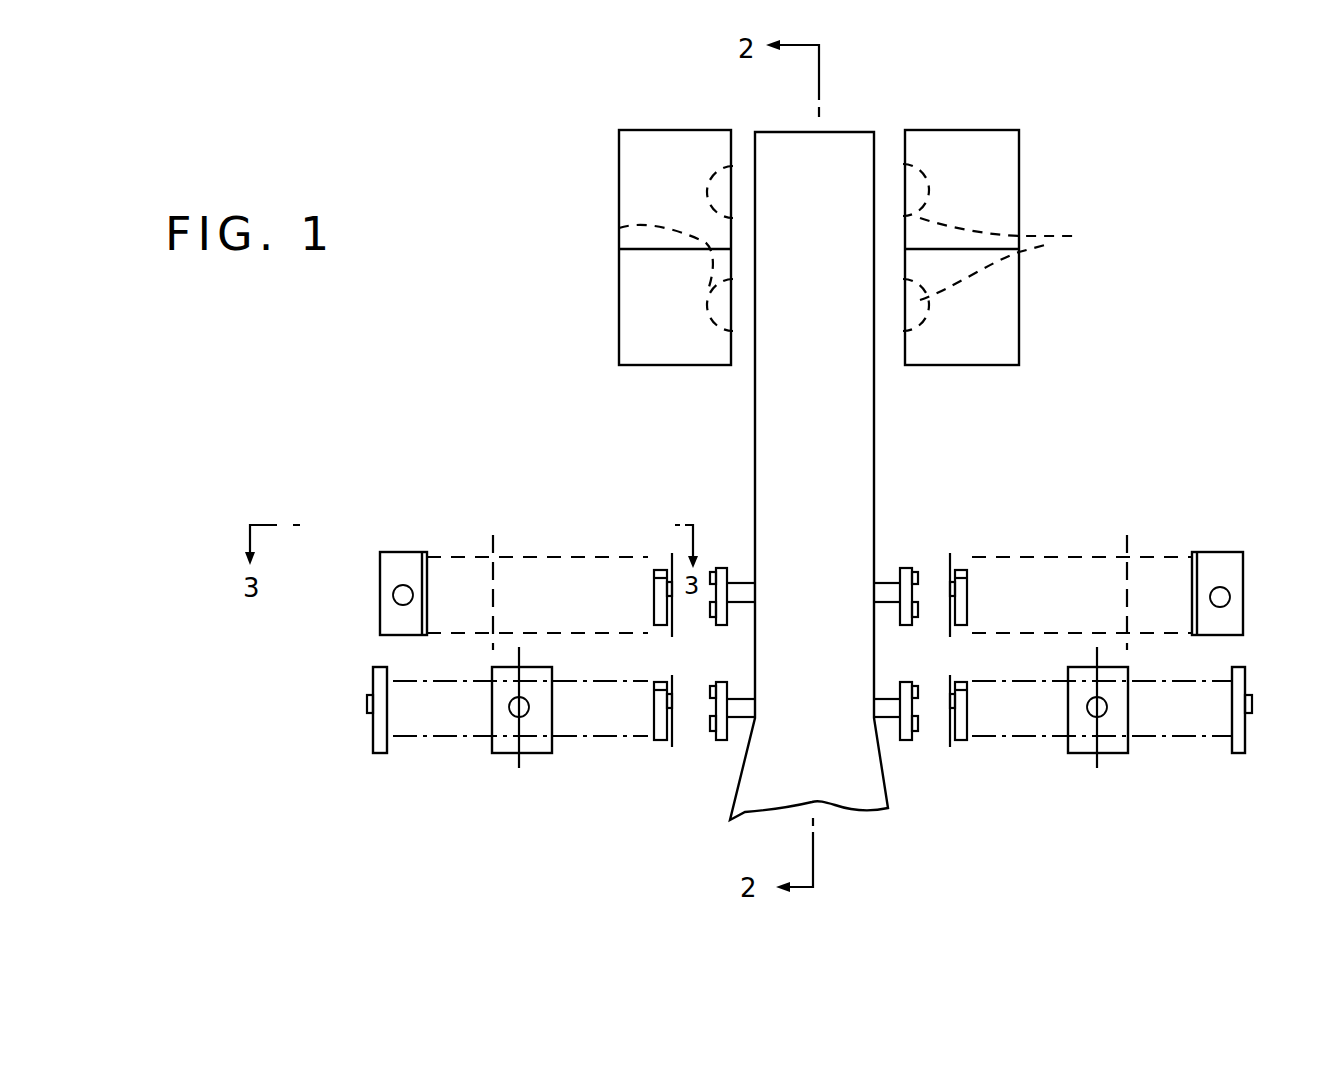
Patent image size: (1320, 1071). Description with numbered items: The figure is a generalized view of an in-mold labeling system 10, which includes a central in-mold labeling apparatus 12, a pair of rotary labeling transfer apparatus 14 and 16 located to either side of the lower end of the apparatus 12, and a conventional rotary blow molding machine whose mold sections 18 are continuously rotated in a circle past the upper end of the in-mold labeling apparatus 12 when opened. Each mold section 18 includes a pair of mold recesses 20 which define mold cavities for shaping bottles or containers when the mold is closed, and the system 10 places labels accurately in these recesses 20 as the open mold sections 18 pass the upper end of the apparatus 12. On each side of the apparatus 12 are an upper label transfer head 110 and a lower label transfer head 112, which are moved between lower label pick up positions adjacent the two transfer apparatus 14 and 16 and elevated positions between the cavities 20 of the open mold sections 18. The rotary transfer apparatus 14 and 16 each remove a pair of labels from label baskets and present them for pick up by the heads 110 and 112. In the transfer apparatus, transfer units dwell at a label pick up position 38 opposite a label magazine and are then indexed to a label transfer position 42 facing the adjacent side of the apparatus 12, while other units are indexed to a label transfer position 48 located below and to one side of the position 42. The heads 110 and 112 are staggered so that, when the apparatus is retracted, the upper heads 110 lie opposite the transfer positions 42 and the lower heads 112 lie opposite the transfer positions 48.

The in-mold labeling system 10 is at (1150, 146).
The in-mold labeling apparatus 12 is at (880, 442).
The rotary labeling transfer apparatus 14 is at (510, 540).
The rotary labeling transfer apparatus 16 is at (1143, 540).
The mold section 18 is at (619, 160).
The mold recess 20 is at (619, 228).
The label pick up position 38 is at (409, 540).
The label transfer position 42 is at (661, 540).
The label transfer position 48 is at (659, 757).
The upper label transfer head 110 is at (722, 566).
The lower label transfer head 112 is at (718, 742).